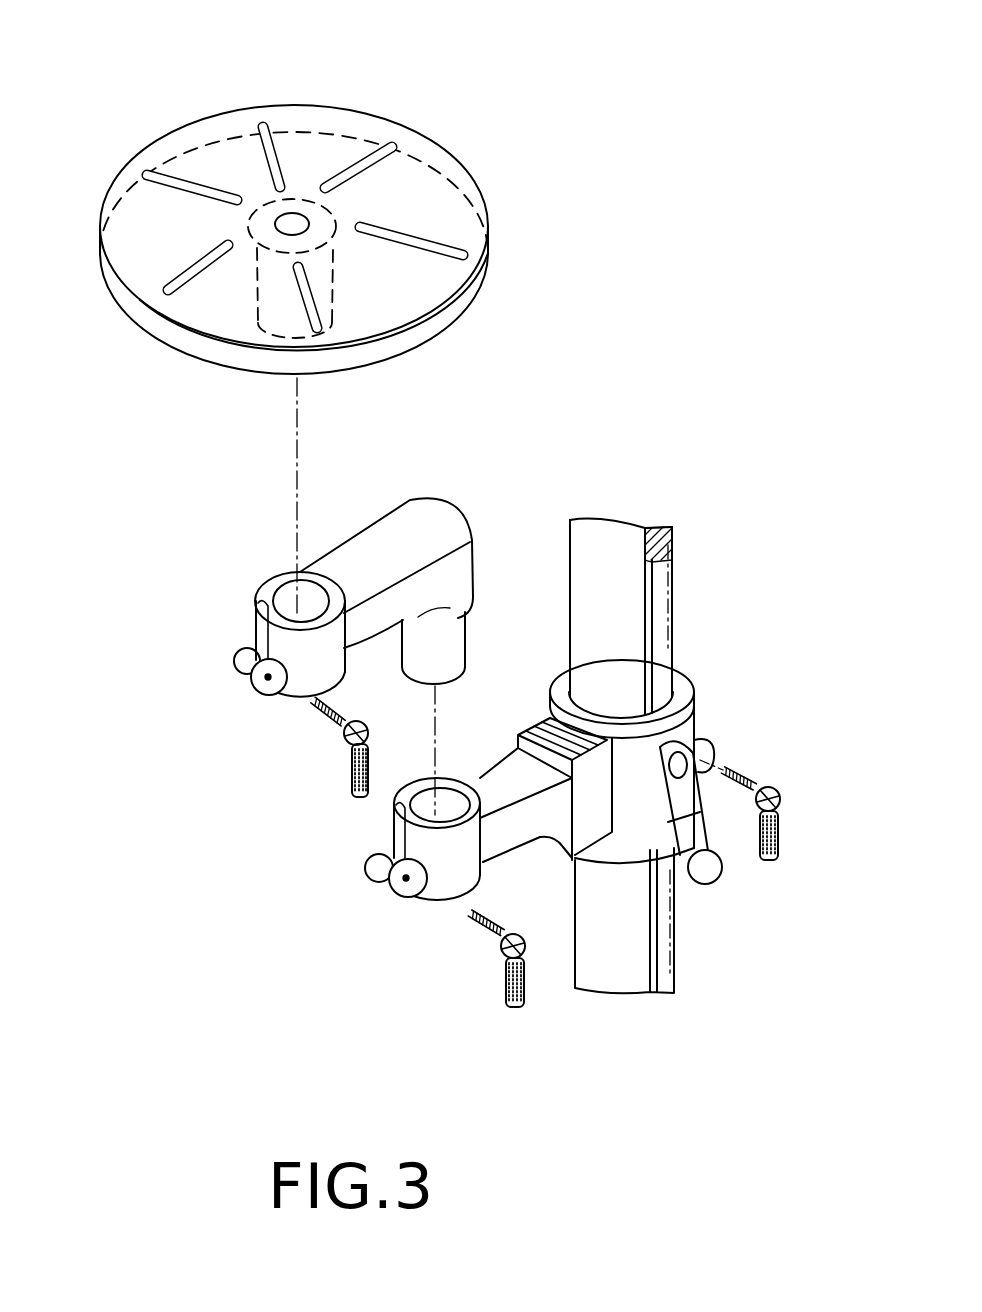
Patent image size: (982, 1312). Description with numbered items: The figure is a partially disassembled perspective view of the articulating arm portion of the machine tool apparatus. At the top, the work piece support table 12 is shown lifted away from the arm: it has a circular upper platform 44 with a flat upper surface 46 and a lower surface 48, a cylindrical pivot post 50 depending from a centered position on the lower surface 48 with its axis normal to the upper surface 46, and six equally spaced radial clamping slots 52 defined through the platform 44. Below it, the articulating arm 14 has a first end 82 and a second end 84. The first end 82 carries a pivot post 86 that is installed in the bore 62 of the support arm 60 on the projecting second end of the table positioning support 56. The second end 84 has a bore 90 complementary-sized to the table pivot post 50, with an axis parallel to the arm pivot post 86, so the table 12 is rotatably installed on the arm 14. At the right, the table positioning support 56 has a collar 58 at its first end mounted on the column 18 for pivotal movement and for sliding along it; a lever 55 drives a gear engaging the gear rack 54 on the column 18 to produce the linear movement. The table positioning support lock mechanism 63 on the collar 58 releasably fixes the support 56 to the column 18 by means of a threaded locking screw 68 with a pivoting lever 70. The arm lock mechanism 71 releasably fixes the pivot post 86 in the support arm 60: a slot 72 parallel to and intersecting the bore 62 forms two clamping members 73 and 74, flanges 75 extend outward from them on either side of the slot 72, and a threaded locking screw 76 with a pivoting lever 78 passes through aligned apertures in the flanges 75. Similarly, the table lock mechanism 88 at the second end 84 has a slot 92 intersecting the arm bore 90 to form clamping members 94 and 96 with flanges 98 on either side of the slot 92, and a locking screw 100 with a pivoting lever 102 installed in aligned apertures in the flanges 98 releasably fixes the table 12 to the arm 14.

The work piece support table 12 is at (328, 191).
The articulating arm 14 is at (325, 634).
The column 18 is at (612, 592).
The upper platform 44 is at (395, 125).
The upper surface 46 is at (180, 235).
The lower surface 48 is at (447, 277).
The pivot post 50 is at (323, 298).
The clamping slots 52 is at (275, 128).
The gear rack 54 is at (668, 950).
The lever 55 is at (708, 863).
The table positioning support 56 is at (679, 661).
The collar 58 is at (678, 685).
The support arm 60 is at (498, 775).
The bore 62 is at (423, 805).
The table positioning support lock mechanism 63 is at (579, 833).
The threaded locking screw 68 is at (753, 780).
The pivoting lever 70 is at (780, 840).
The arm lock mechanism 71 is at (443, 903).
The slot 72 is at (373, 880).
The clamping member 73 is at (410, 785).
The clamping member 74 is at (462, 872).
The flanges 75 is at (377, 857).
The threaded locking screw 76 is at (497, 933).
The pivoting lever 78 is at (523, 1007).
The first end 82 is at (453, 512).
The second end 84 is at (253, 608).
The pivot post 86 is at (448, 665).
The table lock mechanism 88 is at (259, 733).
The bore 90 is at (287, 600).
The slot 92 is at (240, 675).
The clamping member 94 is at (328, 673).
The clamping member 96 is at (257, 613).
The flanges 98 is at (243, 650).
The locking screw 100 is at (320, 718).
The pivoting lever 102 is at (355, 780).